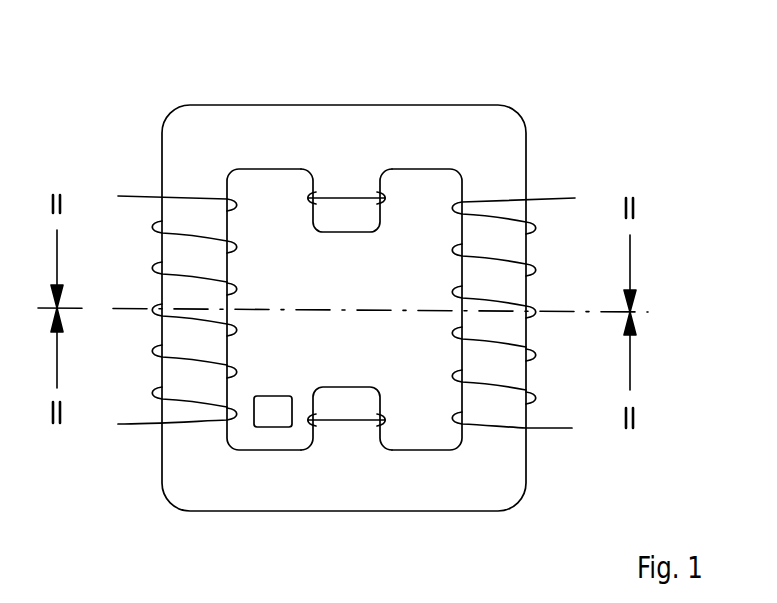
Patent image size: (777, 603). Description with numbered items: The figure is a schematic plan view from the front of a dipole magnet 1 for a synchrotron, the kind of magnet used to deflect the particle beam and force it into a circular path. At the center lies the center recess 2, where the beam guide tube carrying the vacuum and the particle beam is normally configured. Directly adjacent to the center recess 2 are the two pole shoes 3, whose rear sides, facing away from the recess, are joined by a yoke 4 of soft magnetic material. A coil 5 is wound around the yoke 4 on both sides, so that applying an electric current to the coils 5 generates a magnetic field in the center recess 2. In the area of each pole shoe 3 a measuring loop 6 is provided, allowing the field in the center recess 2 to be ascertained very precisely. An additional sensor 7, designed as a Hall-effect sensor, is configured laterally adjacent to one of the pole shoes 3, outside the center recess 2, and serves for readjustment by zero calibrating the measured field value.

The dipole magnet 1 is at (652, 112).
The center recess 2 is at (334, 290).
The pole shoe 3 is at (363, 218).
The yoke 4 is at (252, 137).
The coil 5 is at (146, 197).
The measuring loop 6 is at (342, 197).
The sensor 7 is at (276, 414).